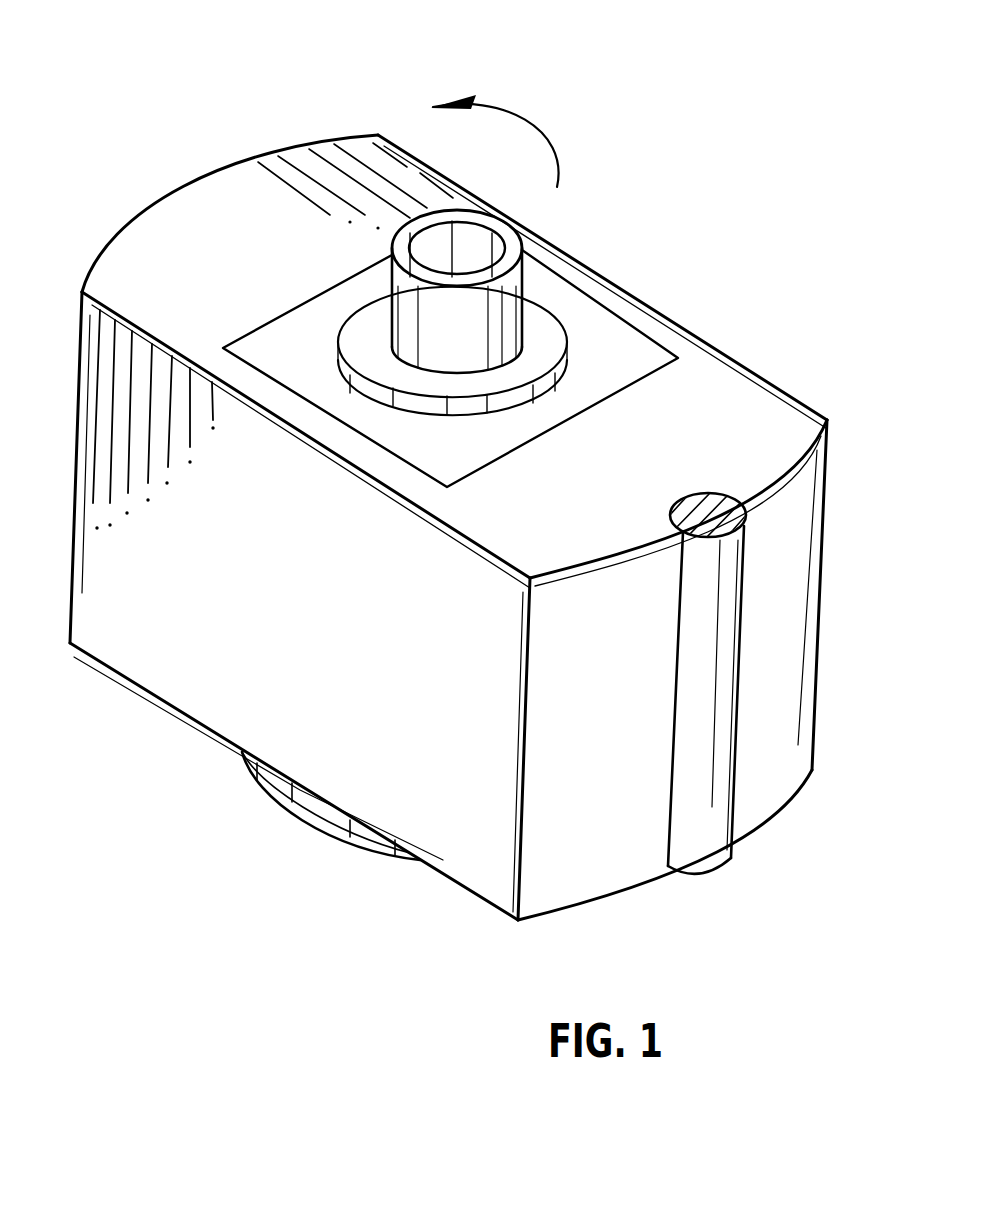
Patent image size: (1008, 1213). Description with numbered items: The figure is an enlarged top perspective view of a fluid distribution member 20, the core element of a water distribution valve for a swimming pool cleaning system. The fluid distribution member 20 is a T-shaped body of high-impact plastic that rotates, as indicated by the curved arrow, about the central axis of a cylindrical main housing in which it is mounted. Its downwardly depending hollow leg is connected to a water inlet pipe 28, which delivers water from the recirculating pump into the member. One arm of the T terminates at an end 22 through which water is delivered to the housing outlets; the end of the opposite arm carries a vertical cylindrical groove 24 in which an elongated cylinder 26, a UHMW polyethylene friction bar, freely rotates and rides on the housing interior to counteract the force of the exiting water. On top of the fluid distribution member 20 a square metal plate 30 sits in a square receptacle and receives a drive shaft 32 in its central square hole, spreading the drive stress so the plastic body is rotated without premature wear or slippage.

The fluid distribution member 20 is at (150, 640).
The end 22 is at (175, 190).
The vertical cylindrical groove 24 is at (730, 510).
The elongated cylinder 26 is at (717, 598).
The water inlet pipe 28 is at (313, 825).
The square metal plate 30 is at (603, 349).
The drive shaft 32 is at (490, 317).